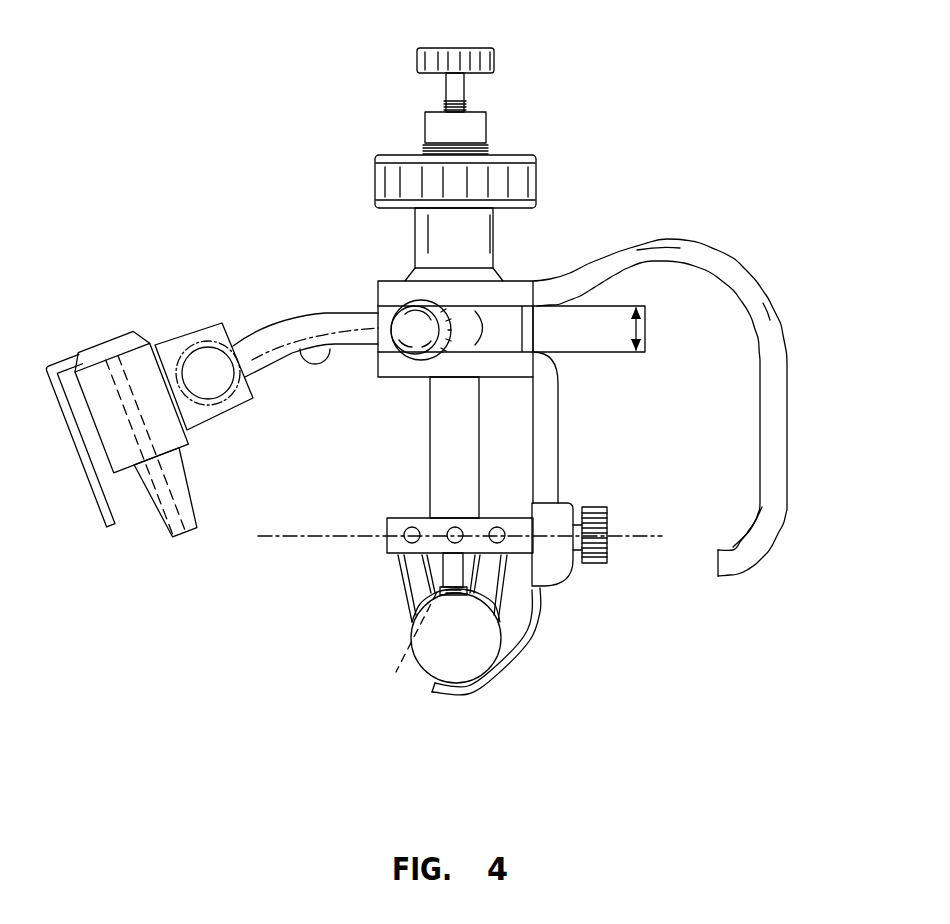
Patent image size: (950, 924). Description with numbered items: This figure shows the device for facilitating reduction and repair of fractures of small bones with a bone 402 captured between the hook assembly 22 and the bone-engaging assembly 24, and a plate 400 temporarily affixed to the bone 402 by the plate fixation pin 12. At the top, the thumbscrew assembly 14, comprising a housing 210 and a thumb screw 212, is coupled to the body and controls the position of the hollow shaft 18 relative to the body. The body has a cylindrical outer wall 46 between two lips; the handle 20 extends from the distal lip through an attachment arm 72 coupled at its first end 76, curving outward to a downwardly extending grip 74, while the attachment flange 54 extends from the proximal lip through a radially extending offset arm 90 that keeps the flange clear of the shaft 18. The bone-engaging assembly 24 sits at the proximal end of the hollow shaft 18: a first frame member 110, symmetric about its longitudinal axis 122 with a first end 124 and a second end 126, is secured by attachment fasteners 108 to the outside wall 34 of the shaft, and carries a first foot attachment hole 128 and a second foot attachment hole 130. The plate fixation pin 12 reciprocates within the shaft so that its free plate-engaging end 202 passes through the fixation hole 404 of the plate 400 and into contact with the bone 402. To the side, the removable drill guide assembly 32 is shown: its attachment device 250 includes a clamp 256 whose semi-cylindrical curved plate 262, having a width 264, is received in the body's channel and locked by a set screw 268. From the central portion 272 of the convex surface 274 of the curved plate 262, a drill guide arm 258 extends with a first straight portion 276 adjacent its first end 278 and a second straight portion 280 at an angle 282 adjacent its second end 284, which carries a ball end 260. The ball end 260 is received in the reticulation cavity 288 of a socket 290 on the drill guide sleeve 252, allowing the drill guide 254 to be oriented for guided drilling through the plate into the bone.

The plate fixation pin 12 is at (500, 40).
The thumbscrew assembly 14 is at (548, 181).
The hollow shaft 18 is at (484, 447).
The handle 20 is at (760, 281).
The hook assembly 22 is at (524, 660).
The bone-engaging assembly 24 is at (386, 582).
The removable drill guide assembly 32 is at (246, 192).
The outside wall of the hollow shaft 34 is at (471, 434).
The cylindrical outer wall 46 is at (533, 330).
The attachment flange 54 is at (560, 463).
The attachment arm 72 is at (683, 239).
The grip 74 is at (790, 408).
The first end of the attachment arm 76 is at (534, 302).
The offset arm 90 is at (552, 383).
The attachment fasteners 108 is at (458, 527).
The first frame member 110 is at (386, 521).
The longitudinal axis of the first frame member 122 is at (259, 540).
The first end of the first frame member 124 is at (386, 542).
The second end of the first frame member 126 is at (612, 552).
The first foot attachment hole 128 is at (412, 527).
The second foot attachment hole 130 is at (541, 585).
The plate-engaging end 202 is at (410, 622).
The housing 210 is at (373, 205).
The thumb screw 212 is at (428, 152).
The attachment device 250 is at (326, 381).
The drill guide sleeve 252 is at (98, 450).
The drill guide 254 is at (107, 337).
The clamp 256 is at (387, 343).
The drill guide arm 258 is at (287, 330).
The ball end 260 is at (153, 347).
The curved plate 262 is at (472, 340).
The width of the curved plate 264 is at (641, 330).
The set screw 268 is at (408, 307).
The central portion of the convex surface 272 is at (367, 335).
The convex surface 274 is at (471, 311).
The first straight portion 276 is at (345, 330).
The first end of the drill guide arm 278 is at (343, 336).
The second straight portion 280 is at (257, 348).
The angle 282 is at (305, 355).
The second end of the drill guide arm 284 is at (222, 323).
The reticulation cavity 288 is at (206, 437).
The socket 290 is at (172, 345).
The plate 400 is at (505, 542).
The bone 402 is at (437, 664).
The fixation hole 404 is at (393, 675).